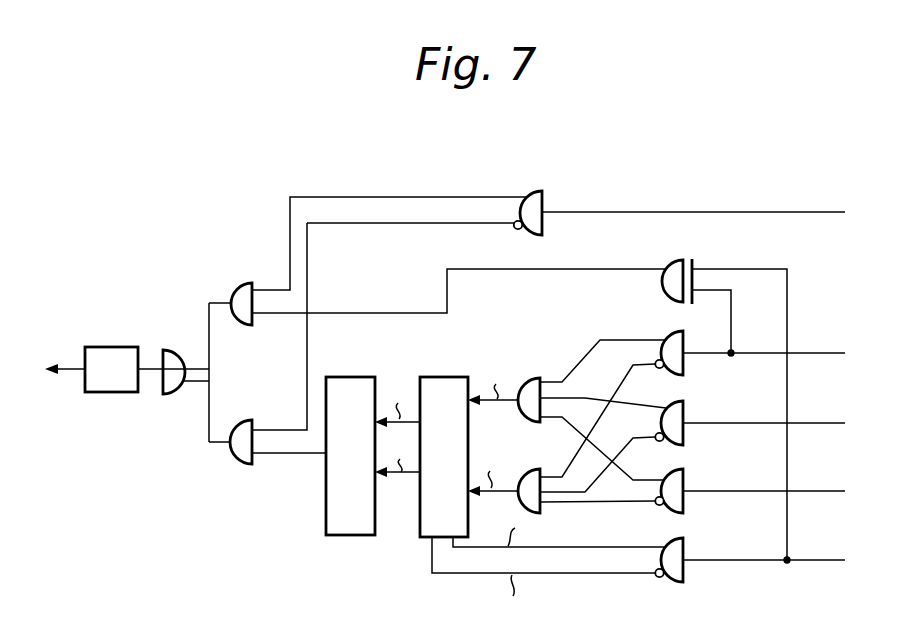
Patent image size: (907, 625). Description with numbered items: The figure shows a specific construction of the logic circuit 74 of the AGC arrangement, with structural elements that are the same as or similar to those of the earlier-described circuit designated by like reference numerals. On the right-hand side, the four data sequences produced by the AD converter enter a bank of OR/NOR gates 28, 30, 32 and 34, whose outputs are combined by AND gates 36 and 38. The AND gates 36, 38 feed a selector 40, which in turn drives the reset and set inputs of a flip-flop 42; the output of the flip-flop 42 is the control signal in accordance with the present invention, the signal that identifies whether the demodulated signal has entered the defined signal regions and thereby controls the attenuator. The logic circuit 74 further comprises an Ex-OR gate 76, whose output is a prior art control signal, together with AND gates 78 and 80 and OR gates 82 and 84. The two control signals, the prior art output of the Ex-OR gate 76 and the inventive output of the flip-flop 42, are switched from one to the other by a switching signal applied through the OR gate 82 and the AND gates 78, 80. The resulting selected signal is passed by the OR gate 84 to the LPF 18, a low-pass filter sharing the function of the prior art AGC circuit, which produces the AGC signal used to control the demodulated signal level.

The LPF 18 is at (111, 346).
The OR/NOR gate 28 is at (686, 340).
The OR/NOR gate 30 is at (688, 410).
The OR/NOR gate 32 is at (687, 479).
The OR/NOR gate 34 is at (687, 546).
The AND gate 36 is at (527, 378).
The AND gate 38 is at (527, 469).
The selector 40 is at (447, 376).
The flip-flop 42 is at (350, 376).
The logic circuit 74 is at (750, 182).
The Ex-OR gate 76 is at (672, 259).
The AND gate 78 is at (238, 283).
The AND gate 80 is at (240, 420).
The OR gate 82 is at (543, 193).
The OR gate 84 is at (171, 394).